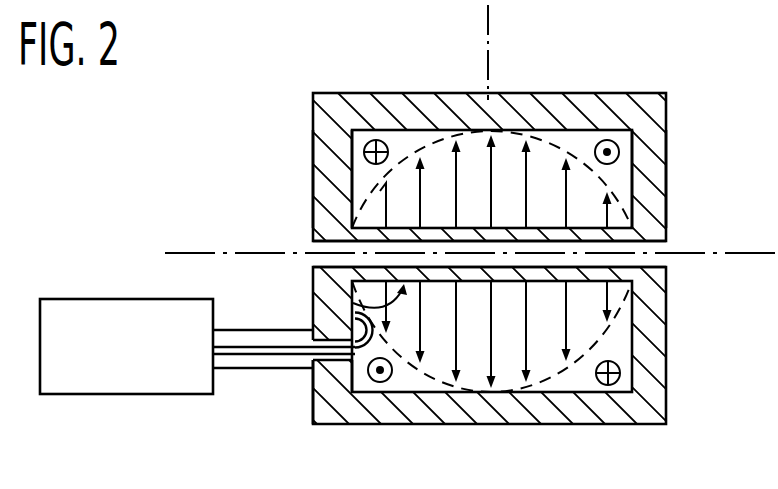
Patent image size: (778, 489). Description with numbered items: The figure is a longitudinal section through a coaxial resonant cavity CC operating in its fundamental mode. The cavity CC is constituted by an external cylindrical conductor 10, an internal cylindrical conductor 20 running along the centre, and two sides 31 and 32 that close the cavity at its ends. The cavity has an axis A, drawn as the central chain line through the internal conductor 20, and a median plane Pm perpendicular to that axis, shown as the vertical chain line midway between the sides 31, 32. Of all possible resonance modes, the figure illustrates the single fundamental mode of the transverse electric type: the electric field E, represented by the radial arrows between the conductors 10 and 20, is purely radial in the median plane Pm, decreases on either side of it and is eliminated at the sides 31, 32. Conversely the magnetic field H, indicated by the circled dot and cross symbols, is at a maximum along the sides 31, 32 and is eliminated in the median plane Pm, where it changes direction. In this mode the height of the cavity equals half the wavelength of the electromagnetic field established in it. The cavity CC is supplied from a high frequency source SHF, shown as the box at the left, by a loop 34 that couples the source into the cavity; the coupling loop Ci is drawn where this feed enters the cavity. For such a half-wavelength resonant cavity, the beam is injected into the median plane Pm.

The external cylindrical conductor 10 is at (445, 117).
The internal cylindrical conductor 20 is at (612, 268).
The side 31 is at (330, 190).
The side 32 is at (648, 187).
The loop 34 is at (356, 362).
The magnetic field H is at (364, 150).
The electric field E is at (568, 335).
The coupling loop Ci is at (353, 303).
The coaxial cavity CC is at (655, 88).
The high frequency source SHF is at (123, 373).
The axis A is at (192, 253).
The median plane Pm is at (490, 27).